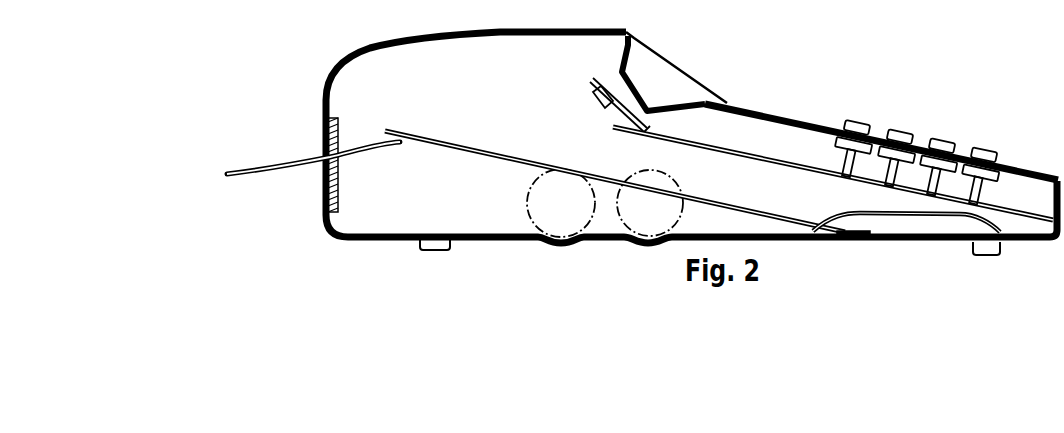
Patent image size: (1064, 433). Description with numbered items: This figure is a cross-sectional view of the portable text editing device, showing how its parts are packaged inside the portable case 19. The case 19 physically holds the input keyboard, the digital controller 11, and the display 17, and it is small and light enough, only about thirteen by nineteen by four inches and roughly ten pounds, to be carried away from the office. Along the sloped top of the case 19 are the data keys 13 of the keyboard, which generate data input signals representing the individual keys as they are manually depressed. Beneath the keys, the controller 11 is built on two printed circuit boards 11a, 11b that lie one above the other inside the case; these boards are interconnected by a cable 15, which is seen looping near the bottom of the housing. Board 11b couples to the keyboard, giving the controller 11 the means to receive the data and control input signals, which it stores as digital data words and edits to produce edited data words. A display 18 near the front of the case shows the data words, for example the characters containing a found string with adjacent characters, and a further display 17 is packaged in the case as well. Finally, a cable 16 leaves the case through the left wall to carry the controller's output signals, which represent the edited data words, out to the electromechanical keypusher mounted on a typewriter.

The portable case 19 is at (500, 26).
The display 18 is at (637, 77).
The display 17 is at (602, 78).
The digital controller 11 is at (719, 151).
The printed circuit board 11a is at (533, 163).
The printed circuit board 11b is at (700, 150).
The data keys 13 is at (893, 134).
The cable 16 is at (357, 157).
The cable 15 is at (858, 213).